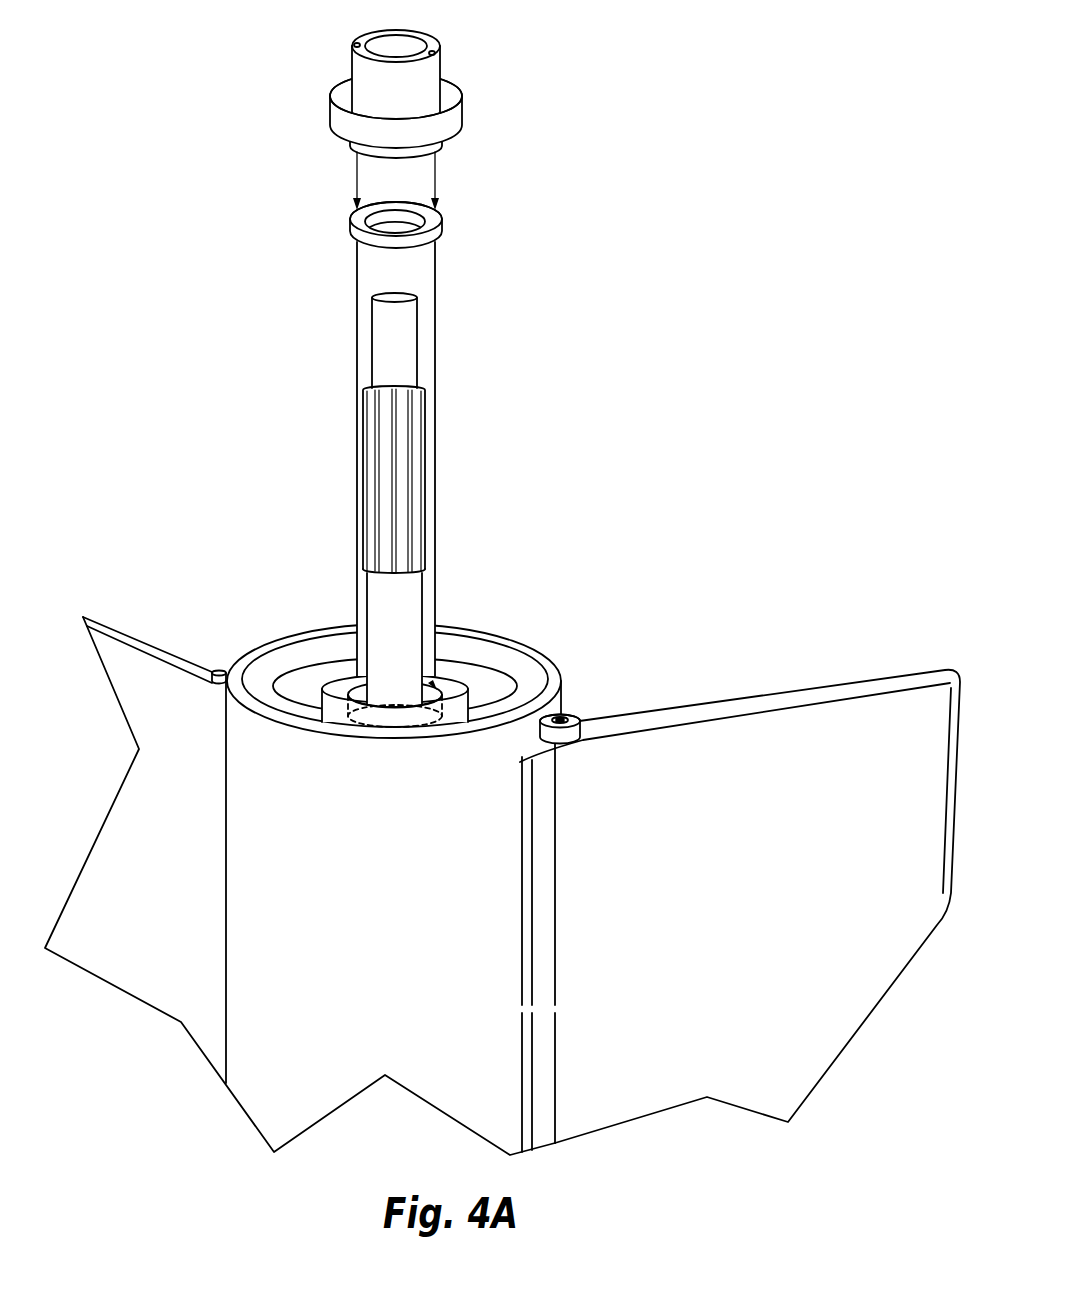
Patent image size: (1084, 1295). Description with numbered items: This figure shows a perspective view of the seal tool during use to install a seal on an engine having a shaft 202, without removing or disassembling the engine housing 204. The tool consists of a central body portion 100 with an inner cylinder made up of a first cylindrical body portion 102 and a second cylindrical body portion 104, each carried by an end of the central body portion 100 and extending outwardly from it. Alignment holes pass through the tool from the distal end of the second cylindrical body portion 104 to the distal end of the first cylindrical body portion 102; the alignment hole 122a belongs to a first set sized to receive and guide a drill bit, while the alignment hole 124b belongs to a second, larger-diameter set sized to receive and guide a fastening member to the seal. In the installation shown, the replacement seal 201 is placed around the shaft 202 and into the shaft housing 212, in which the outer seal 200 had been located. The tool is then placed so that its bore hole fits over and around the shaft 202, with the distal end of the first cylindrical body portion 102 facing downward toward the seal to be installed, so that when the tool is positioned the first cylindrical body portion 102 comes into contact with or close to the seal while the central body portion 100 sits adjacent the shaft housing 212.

The central body portion 100 is at (397, 116).
The first cylindrical body portion 102 is at (350, 144).
The second cylindrical body portion 104 is at (401, 71).
The alignment hole 122a is at (354, 45).
The alignment hole 124b is at (423, 73).
The outer seal 200 is at (447, 227).
The replacement seal 201 is at (352, 686).
The shaft 202 is at (371, 356).
The engine housing 204 is at (563, 702).
The shaft housing 212 is at (422, 666).